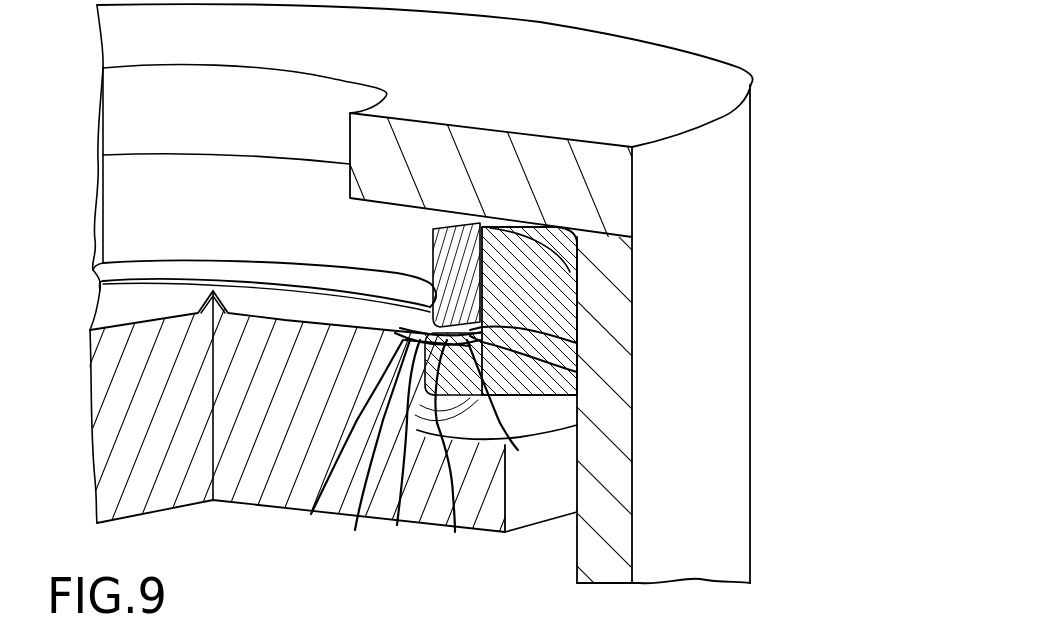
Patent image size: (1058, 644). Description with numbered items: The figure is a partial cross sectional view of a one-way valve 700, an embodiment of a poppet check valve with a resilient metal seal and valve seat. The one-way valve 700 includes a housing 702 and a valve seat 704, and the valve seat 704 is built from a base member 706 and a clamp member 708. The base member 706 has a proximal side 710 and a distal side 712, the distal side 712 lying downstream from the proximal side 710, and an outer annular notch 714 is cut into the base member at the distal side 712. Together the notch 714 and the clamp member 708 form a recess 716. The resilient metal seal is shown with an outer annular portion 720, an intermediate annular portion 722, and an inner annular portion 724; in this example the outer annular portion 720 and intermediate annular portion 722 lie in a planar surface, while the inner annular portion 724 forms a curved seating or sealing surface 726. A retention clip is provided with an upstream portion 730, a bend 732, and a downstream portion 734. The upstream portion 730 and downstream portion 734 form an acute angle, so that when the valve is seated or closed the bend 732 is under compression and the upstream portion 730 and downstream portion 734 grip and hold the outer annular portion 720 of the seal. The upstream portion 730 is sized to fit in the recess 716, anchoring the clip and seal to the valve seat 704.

The one-way valve 700 is at (820, 74).
The housing 702 is at (723, 560).
The valve seat 704 is at (623, 323).
The base member 706 is at (485, 220).
The clamp member 708 is at (553, 397).
The proximal side 710 is at (432, 257).
The distal side 712 is at (468, 292).
The outer annular notch 714 is at (470, 315).
The recess 716 is at (577, 343).
The outer annular portion 720 is at (375, 454).
The intermediate annular portion 722 is at (311, 514).
The inner annular portion 724 is at (383, 305).
The sealing surface 726 is at (400, 330).
The upstream portion 730 is at (505, 411).
The bend 732 is at (577, 372).
The downstream portion 734 is at (453, 458).